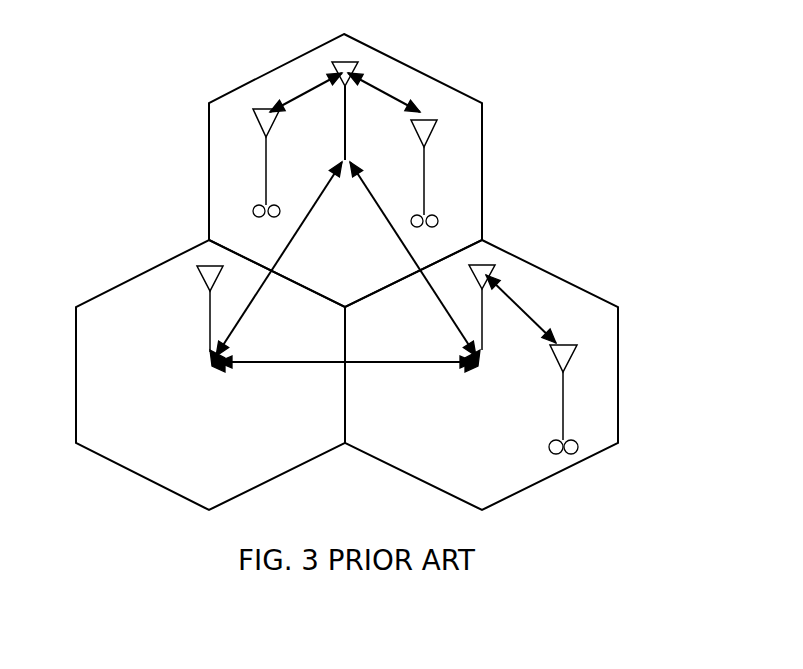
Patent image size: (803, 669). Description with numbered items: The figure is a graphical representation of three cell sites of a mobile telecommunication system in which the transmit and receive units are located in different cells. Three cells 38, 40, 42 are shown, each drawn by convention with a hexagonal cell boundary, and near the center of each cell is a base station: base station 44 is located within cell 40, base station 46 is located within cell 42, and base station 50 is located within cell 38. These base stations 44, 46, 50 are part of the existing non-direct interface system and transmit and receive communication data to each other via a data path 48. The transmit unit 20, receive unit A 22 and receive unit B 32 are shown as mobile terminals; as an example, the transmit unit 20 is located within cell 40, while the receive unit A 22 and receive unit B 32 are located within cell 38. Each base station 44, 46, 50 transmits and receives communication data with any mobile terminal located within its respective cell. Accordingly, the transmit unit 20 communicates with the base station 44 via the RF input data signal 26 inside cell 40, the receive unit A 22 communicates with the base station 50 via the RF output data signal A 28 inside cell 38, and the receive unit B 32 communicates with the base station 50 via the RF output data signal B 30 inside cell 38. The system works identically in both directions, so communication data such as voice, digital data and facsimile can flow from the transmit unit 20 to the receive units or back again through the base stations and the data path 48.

The transmit unit 20 is at (562, 420).
The receive unit A 22 is at (266, 182).
The input signal 26 is at (503, 290).
The output signal A 28 is at (312, 83).
The output signal B 30 is at (390, 98).
The receive unit B 32 is at (424, 182).
The cell 38 is at (477, 227).
The cell 40 is at (498, 491).
The cell 42 is at (115, 334).
The base station 44 is at (483, 330).
The base station 46 is at (210, 342).
The data path 48 is at (402, 252).
The base station 50 is at (344, 148).